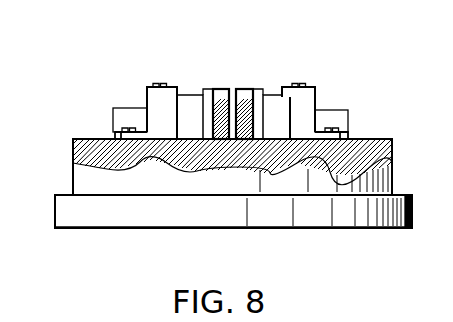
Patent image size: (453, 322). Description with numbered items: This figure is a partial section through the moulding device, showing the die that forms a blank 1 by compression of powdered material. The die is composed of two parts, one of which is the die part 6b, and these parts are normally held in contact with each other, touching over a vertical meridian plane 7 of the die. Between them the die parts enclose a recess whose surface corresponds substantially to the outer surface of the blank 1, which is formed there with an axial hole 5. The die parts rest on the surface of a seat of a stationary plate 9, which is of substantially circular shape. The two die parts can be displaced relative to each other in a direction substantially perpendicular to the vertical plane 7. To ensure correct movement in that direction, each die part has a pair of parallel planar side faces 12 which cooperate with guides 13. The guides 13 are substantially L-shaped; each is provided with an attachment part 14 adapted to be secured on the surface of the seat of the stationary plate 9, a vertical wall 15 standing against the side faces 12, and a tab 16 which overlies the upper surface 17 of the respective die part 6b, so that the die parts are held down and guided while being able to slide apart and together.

The blank 1 is at (223, 90).
The axial hole 5 is at (235, 90).
The die part 6b is at (190, 94).
The vertical meridian plane 7 is at (279, 110).
The stationary plate 9 is at (394, 169).
The planar side faces 12 is at (170, 115).
The guides 13 is at (140, 88).
The attachment part 14 is at (113, 134).
The vertical wall 15 is at (152, 106).
The tab 16 is at (182, 88).
The upper surface 17 is at (196, 91).